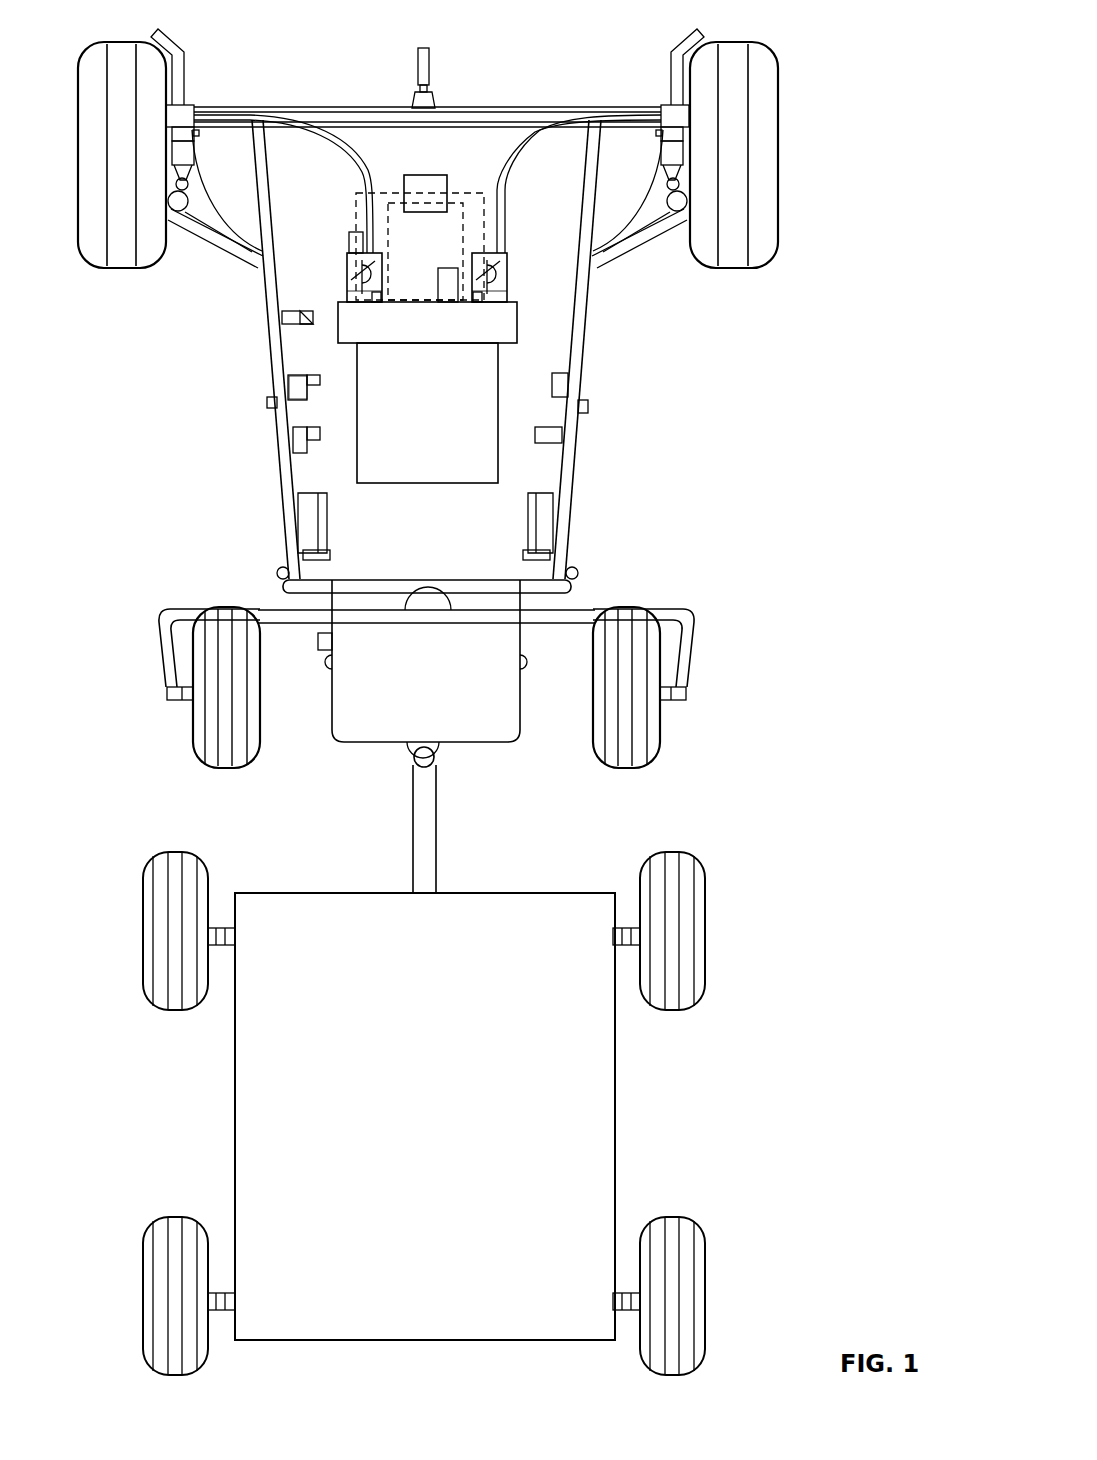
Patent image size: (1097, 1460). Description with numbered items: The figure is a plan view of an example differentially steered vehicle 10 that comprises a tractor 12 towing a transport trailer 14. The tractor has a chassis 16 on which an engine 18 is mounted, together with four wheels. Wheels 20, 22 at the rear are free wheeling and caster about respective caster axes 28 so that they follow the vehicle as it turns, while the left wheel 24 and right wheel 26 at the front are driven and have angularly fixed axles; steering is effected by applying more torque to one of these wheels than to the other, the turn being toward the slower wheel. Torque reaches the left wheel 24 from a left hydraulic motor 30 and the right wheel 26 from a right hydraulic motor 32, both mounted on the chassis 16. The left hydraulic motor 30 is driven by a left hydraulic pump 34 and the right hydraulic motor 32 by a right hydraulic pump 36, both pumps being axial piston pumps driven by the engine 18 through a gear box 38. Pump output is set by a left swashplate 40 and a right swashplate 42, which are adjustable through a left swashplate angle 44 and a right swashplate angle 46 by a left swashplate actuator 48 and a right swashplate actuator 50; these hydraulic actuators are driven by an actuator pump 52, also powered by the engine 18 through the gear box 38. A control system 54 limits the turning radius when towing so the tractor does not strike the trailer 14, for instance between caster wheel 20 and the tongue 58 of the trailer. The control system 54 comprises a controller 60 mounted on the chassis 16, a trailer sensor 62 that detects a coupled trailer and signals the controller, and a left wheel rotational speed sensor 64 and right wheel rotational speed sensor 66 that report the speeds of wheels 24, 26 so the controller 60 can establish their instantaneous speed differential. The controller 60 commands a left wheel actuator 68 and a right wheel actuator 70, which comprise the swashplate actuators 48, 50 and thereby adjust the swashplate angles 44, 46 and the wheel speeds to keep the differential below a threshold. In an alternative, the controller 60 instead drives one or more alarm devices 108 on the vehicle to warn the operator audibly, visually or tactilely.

The differentially steered vehicle 10 is at (808, 38).
The tractor 12 is at (280, 456).
The transport trailer 14 is at (615, 1105).
The chassis 16 is at (578, 470).
The engine 18 is at (447, 470).
The wheel 20 is at (227, 757).
The wheel 22 is at (624, 757).
The left wheel 24 is at (122, 254).
The right wheel 26 is at (734, 254).
The caster axes 28 is at (265, 608).
The left hydraulic motor 30 is at (187, 106).
The right hydraulic motor 32 is at (668, 106).
The left hydraulic pump 34 is at (286, 318).
The right hydraulic pump 36 is at (506, 270).
The gear box 38 is at (503, 328).
The left swashplate 40 is at (347, 289).
The right swashplate 42 is at (623, 253).
The left swashplate angle 44 is at (374, 272).
The right swashplate angle 46 is at (506, 276).
The left swashplate actuator 48 is at (347, 262).
The right swashplate actuator 50 is at (476, 244).
The actuator pump 52 is at (449, 306).
The control system 54 is at (472, 158).
The tongue 58 is at (438, 832).
The controller 60 is at (421, 186).
The trailer sensor 62 is at (416, 758).
The left wheel rotational speed sensor 64 is at (200, 133).
The right wheel rotational speed sensor 66 is at (655, 133).
The left wheel actuator 68 is at (378, 305).
The right wheel actuator 70 is at (474, 305).
The alarm devices 108 is at (296, 384).